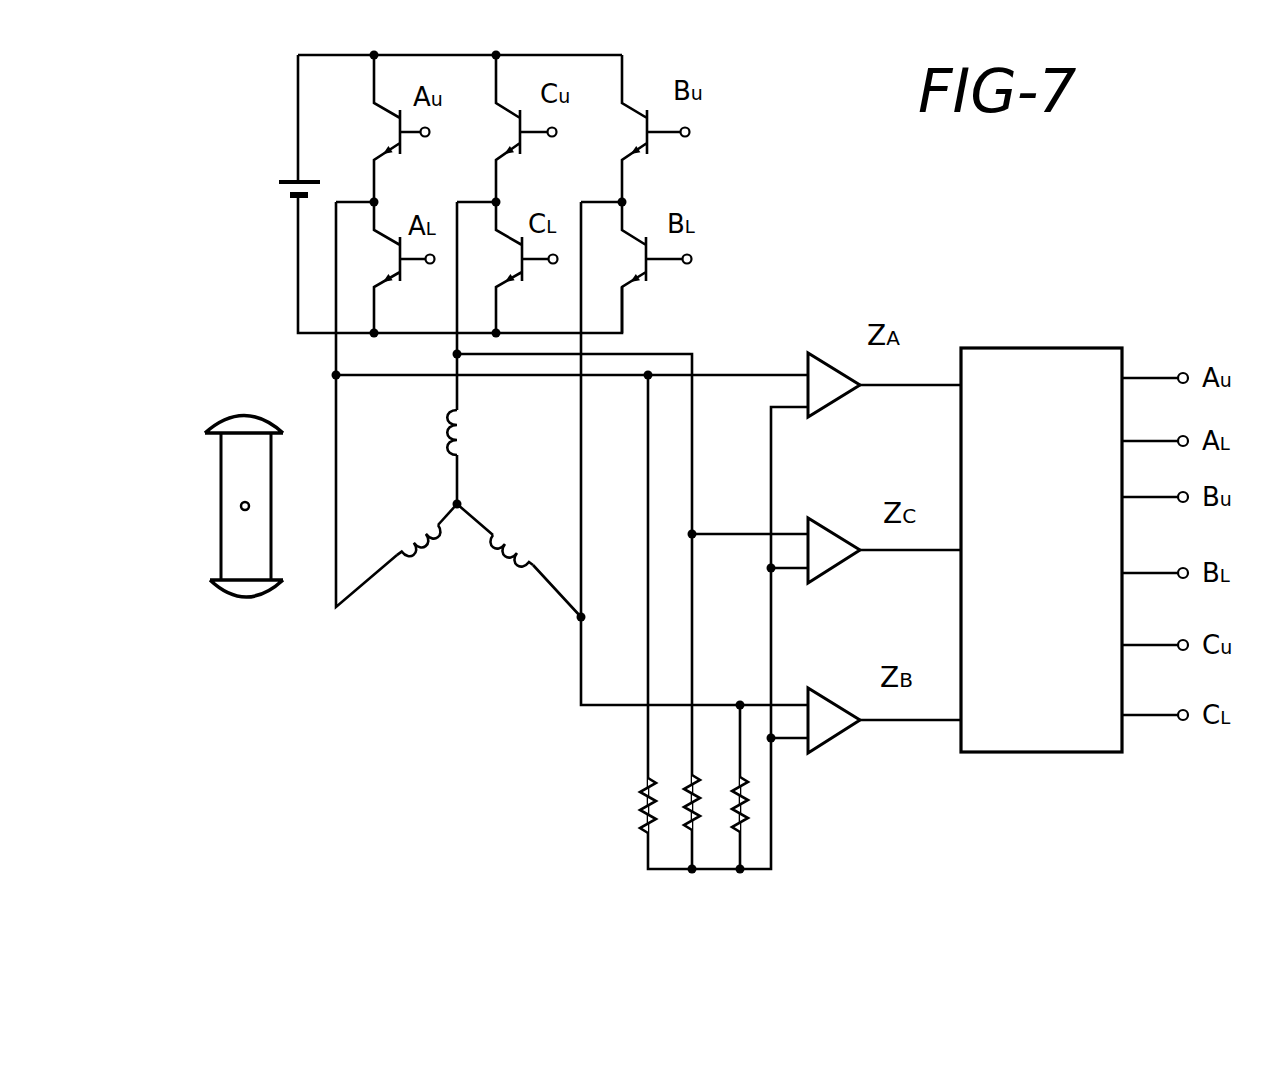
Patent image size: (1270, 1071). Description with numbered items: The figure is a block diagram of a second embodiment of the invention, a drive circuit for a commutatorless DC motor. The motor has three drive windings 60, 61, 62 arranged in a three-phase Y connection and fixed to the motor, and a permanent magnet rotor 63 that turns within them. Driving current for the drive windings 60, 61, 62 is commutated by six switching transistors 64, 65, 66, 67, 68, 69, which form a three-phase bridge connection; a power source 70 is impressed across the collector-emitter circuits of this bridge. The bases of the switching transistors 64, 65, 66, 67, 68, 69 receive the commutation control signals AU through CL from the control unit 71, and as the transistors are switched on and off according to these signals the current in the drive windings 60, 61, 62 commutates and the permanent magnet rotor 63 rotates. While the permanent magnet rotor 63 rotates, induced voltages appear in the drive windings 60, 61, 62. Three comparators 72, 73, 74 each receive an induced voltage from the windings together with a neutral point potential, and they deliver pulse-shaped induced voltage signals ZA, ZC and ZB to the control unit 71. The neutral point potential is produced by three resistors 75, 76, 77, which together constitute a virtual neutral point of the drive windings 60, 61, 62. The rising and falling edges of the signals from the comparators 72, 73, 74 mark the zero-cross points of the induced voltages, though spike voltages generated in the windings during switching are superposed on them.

The drive winding 60 is at (421, 555).
The drive winding 61 is at (510, 562).
The drive winding 62 is at (471, 437).
The permanent magnet rotor 63 is at (221, 505).
The switching transistor 64 is at (392, 128).
The switching transistor 65 is at (405, 268).
The switching transistor 66 is at (514, 131).
The switching transistor 67 is at (528, 268).
The switching transistor 68 is at (641, 131).
The switching transistor 69 is at (652, 268).
The power source 70 is at (285, 182).
The control unit 71 is at (1030, 753).
The comparator 72 is at (884, 383).
The comparator 73 is at (897, 548).
The comparator 74 is at (896, 718).
The resistor 75 is at (640, 806).
The resistor 76 is at (687, 817).
The resistor 77 is at (752, 817).